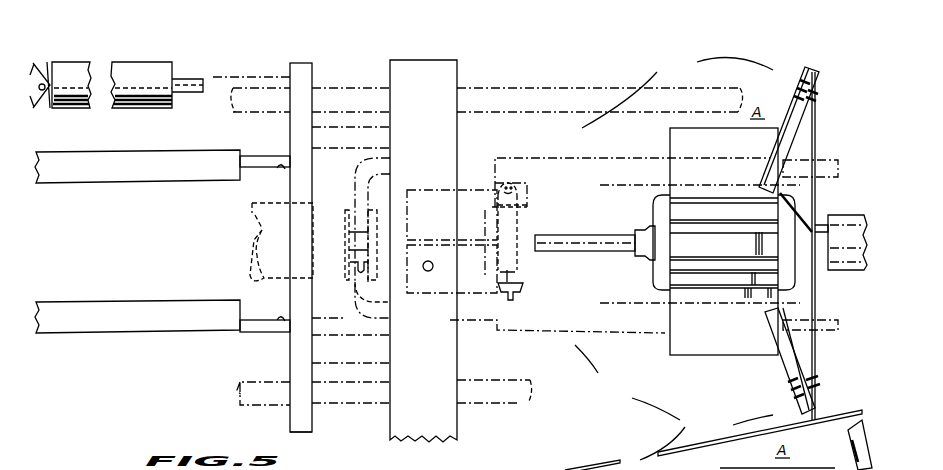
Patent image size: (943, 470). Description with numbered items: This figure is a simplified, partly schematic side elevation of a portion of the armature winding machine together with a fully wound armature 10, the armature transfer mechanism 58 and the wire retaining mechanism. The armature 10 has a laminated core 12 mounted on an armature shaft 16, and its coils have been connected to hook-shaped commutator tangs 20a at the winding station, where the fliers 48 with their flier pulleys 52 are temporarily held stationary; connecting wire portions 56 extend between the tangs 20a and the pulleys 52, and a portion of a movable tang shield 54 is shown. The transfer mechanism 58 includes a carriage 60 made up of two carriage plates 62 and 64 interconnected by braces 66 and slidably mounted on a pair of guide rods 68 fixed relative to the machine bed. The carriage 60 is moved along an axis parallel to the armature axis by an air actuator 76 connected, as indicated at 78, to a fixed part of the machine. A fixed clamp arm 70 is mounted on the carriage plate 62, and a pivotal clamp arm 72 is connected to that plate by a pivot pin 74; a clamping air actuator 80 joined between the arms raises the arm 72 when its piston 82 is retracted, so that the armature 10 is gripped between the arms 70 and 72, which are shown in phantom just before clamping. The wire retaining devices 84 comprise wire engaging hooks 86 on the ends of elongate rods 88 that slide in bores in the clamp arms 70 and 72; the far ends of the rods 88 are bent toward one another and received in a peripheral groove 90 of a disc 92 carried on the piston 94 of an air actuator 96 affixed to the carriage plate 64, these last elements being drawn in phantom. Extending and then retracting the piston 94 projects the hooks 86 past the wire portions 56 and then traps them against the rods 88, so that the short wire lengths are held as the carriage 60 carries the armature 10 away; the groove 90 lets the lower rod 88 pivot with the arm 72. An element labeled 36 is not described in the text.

The armature 10 is at (667, 241).
The laminated core 12 is at (682, 272).
The armature shaft 16 is at (564, 252).
The commutator tangs 20a is at (862, 208).
The diagonal brace 36 is at (796, 208).
The fliers 48 is at (814, 93).
The flier pulleys 52 is at (812, 72).
The movable tang shield 54 is at (866, 222).
The connecting wire portions 56 is at (816, 122).
The transfer mechanism 58 is at (294, 259).
The carriage 60 is at (284, 369).
The carriage plate 62 is at (440, 70).
The carriage plate 64 is at (303, 82).
The braces 66 is at (330, 150).
The guide rods 68 is at (570, 96).
The fixed clamp arm 70 is at (122, 178).
The pivotal clamp arm 72 is at (141, 310).
The pivot pin 74 is at (433, 270).
The air actuator 76 is at (160, 75).
The connection 78 is at (48, 78).
The clamping air actuator 80 is at (508, 208).
The piston 82 is at (515, 280).
The wire retaining devices 84 is at (249, 157).
The wire engaging hooks 86 is at (836, 176).
The elongate rods 88 is at (473, 166).
The peripheral groove 90 is at (352, 244).
The disc 92 is at (357, 285).
The piston 94 is at (352, 272).
The air actuator 96 is at (268, 205).